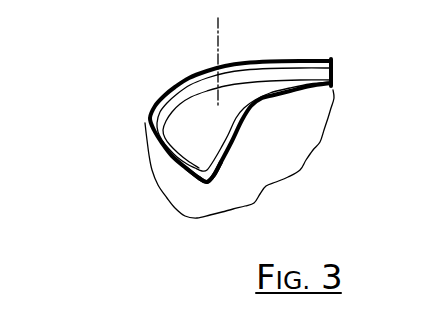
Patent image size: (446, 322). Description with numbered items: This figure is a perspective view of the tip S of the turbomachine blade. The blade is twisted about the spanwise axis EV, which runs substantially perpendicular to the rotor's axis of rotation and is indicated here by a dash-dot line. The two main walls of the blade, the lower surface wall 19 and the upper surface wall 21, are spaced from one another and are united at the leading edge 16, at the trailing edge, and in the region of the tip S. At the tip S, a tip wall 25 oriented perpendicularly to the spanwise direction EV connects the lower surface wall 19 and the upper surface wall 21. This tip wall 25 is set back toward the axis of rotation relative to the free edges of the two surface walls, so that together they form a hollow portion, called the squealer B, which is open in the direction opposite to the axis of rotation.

The tip S is at (107, 78).
The spanwise axis EV is at (216, 26).
The squealer B is at (184, 90).
The tip wall 25 is at (256, 88).
The lower surface wall 19 is at (239, 154).
The upper surface wall 21 is at (159, 159).
The leading edge 16 is at (206, 212).